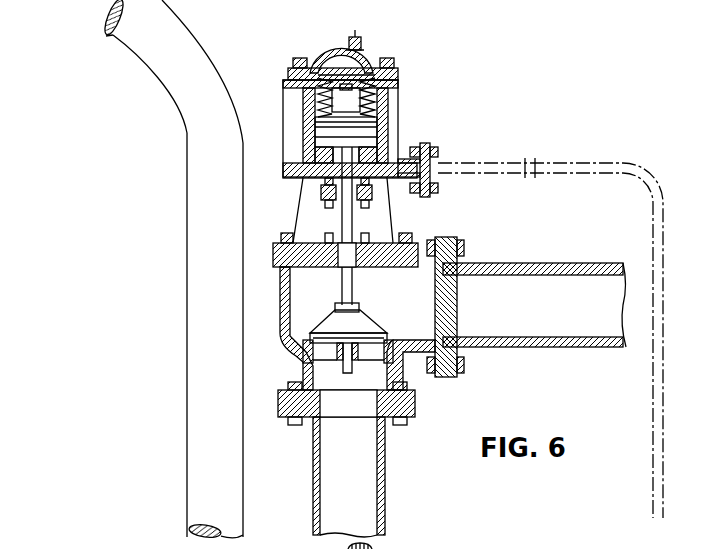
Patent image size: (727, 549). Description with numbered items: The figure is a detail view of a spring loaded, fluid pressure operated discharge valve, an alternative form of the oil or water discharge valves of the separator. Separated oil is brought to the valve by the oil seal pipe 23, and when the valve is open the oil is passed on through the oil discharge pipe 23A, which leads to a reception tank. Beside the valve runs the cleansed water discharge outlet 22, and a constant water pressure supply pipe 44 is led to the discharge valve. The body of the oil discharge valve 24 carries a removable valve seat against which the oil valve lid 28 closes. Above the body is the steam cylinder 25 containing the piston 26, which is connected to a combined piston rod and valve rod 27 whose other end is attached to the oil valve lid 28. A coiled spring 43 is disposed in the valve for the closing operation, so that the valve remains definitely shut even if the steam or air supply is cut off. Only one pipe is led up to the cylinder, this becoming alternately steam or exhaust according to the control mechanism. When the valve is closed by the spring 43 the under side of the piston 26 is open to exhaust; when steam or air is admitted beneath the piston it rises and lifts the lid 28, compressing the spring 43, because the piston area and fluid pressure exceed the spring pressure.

The cleansed water discharge outlet 22 is at (215, 299).
The oil seal pipe 23 is at (357, 472).
The oil discharge pipe 23A is at (573, 307).
The body of the oil discharge valve 24 is at (424, 320).
The steam cylinder 25 is at (427, 148).
The piston 26 is at (358, 135).
The combined piston rod and valve rod 27 is at (345, 220).
The oil valve lid 28 is at (343, 323).
The coiled spring 43 is at (352, 95).
The constant water pressure supply pipe 44 is at (316, 538).